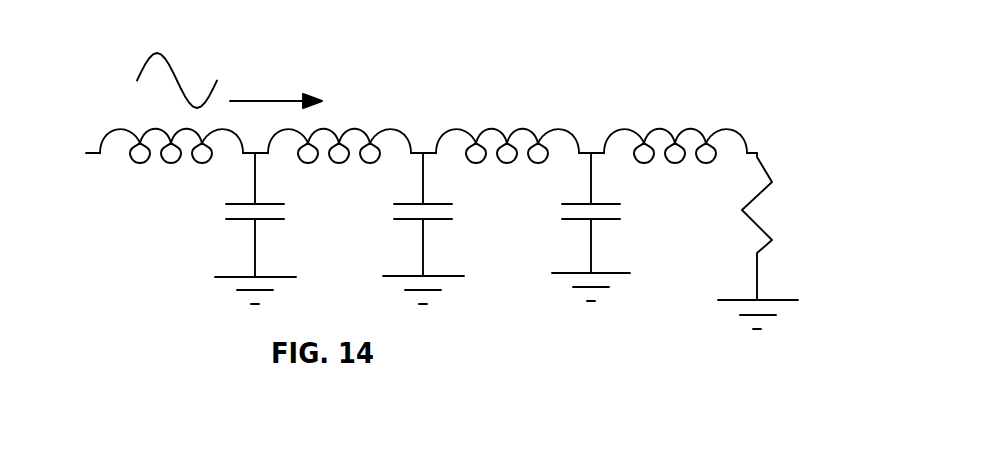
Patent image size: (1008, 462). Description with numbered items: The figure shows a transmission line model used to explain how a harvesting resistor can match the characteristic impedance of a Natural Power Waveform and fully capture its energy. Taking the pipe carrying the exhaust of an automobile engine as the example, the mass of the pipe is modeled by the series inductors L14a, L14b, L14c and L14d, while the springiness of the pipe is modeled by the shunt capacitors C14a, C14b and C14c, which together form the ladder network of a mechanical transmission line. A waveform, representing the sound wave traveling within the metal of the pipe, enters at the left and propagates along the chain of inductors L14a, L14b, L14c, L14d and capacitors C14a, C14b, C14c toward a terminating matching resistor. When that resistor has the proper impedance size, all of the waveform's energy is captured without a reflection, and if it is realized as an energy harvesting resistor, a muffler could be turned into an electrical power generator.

The inductor L14a is at (171, 161).
The inductor L14b is at (339, 160).
The inductor L14c is at (507, 161).
The inductor L14d is at (675, 162).
The capacitor C14a is at (271, 215).
The capacitor C14b is at (441, 214).
The capacitor C14c is at (609, 213).